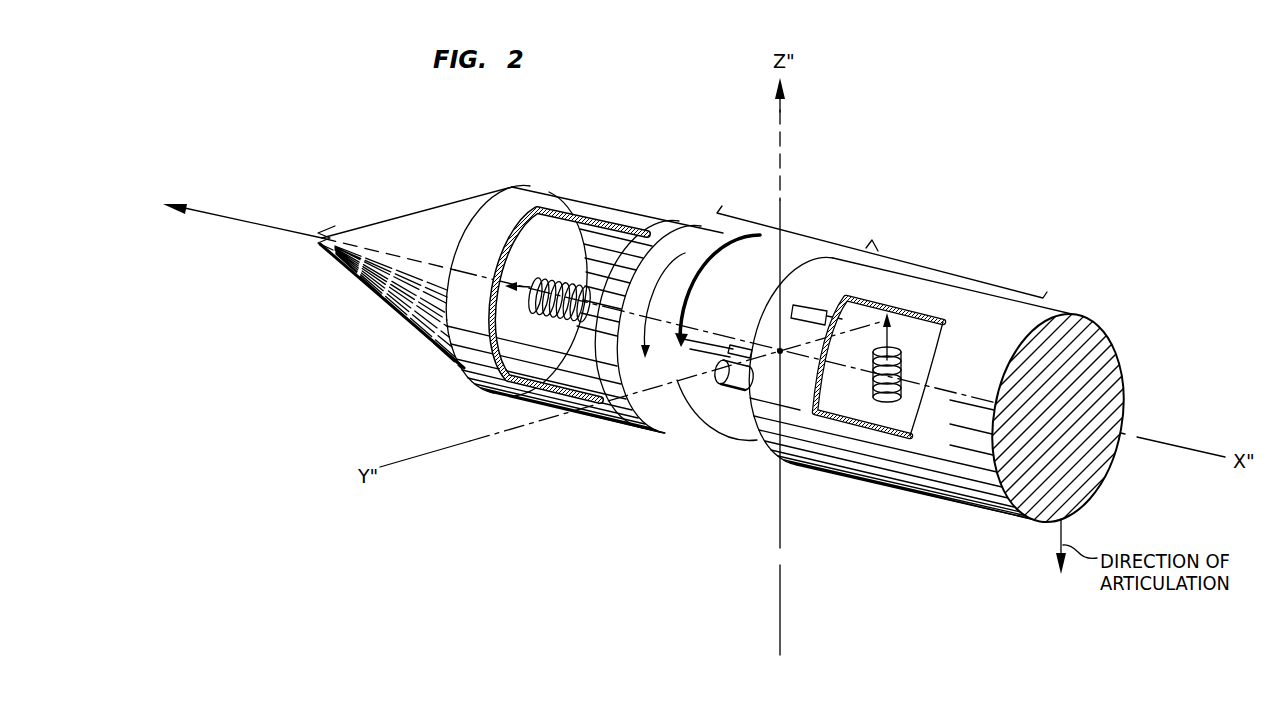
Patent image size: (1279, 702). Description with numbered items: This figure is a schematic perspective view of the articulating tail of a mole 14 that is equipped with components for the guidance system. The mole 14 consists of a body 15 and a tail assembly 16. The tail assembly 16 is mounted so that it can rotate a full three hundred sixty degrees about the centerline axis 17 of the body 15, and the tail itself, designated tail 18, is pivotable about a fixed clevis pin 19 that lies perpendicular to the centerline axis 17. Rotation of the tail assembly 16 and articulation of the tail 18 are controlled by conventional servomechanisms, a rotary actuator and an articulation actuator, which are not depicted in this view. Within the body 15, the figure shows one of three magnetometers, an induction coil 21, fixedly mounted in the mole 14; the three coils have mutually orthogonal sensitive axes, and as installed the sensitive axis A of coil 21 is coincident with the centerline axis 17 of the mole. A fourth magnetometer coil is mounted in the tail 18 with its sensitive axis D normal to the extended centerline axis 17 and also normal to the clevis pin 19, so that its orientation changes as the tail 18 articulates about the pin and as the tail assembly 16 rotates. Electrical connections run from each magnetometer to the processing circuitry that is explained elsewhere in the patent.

The mole 14 is at (920, 556).
The body 15 is at (602, 423).
The tail assembly 16 is at (888, 239).
The centerline axis 17 is at (247, 231).
The tail 18 is at (1046, 315).
The clevis pin 19 is at (719, 378).
The induction coil 21 is at (548, 285).
The sensitive axis A is at (511, 293).
The sensitive axis D is at (887, 330).